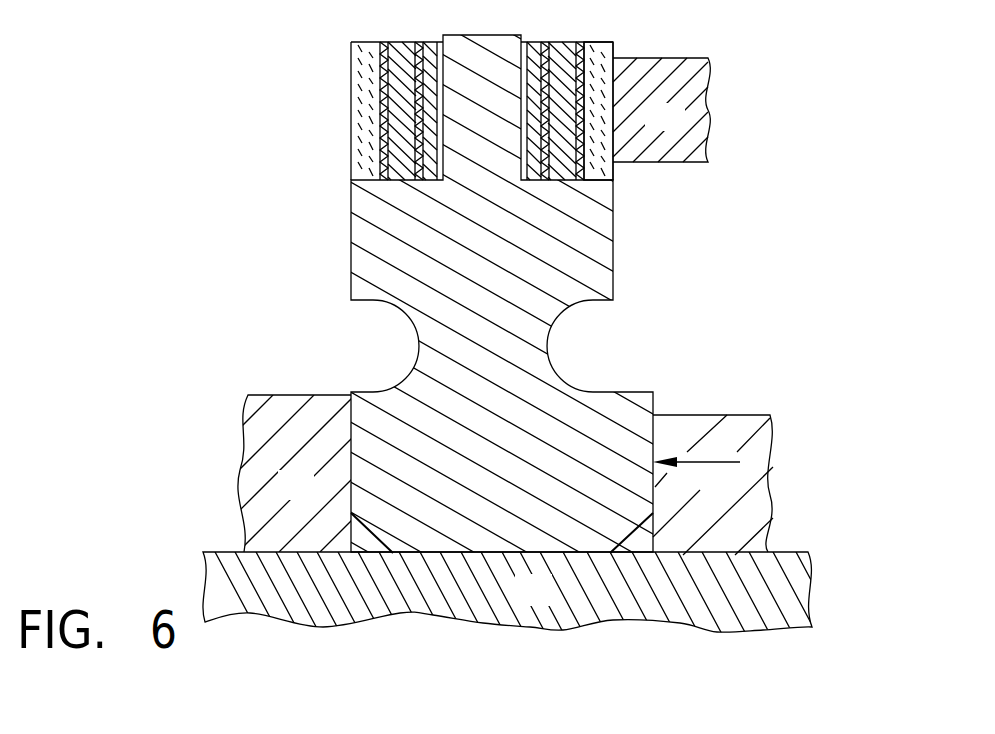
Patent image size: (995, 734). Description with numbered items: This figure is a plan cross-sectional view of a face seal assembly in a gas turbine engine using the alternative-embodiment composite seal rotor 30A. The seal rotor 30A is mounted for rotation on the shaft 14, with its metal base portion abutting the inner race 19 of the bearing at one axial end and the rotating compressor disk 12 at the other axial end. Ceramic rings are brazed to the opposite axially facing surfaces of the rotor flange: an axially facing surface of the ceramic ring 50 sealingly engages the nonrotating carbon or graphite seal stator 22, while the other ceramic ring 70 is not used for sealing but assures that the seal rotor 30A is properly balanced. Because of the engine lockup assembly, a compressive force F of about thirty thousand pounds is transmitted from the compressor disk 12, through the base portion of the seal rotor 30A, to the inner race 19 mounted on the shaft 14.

The seal rotor 30A is at (300, 272).
The ceramic ring 70 is at (351, 115).
The ceramic ring 50 is at (603, 52).
The seal stator 22 is at (681, 127).
The inner race 19 is at (311, 496).
The compressor disk 12 is at (700, 428).
The shaft 14 is at (549, 602).
The compressive force F is at (697, 465).